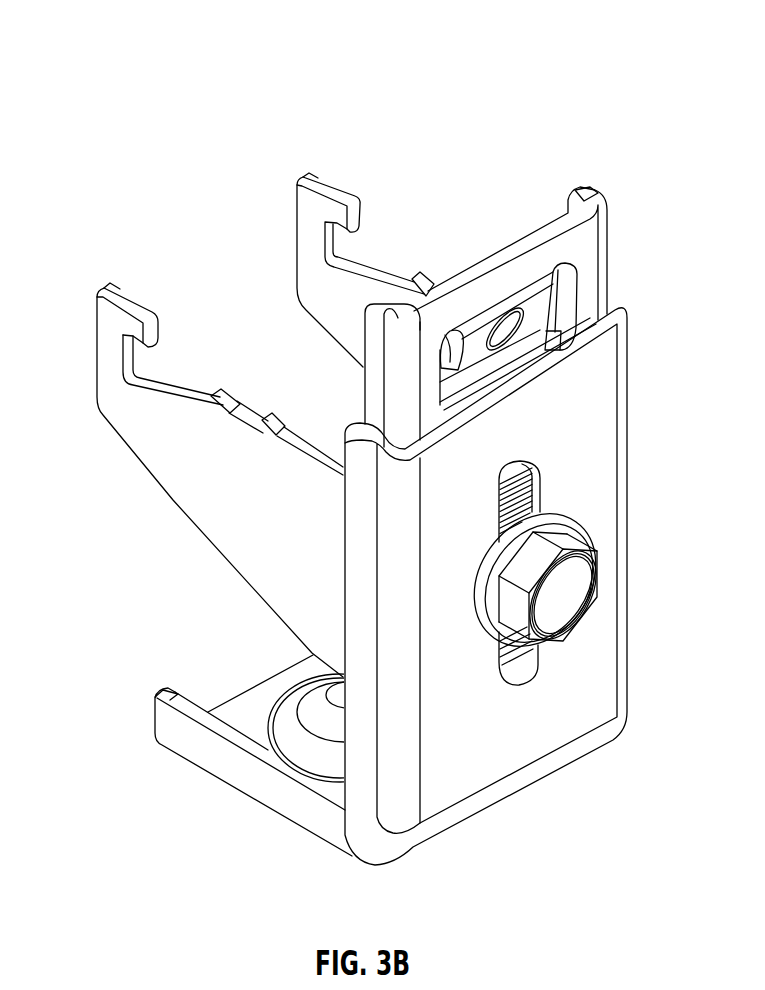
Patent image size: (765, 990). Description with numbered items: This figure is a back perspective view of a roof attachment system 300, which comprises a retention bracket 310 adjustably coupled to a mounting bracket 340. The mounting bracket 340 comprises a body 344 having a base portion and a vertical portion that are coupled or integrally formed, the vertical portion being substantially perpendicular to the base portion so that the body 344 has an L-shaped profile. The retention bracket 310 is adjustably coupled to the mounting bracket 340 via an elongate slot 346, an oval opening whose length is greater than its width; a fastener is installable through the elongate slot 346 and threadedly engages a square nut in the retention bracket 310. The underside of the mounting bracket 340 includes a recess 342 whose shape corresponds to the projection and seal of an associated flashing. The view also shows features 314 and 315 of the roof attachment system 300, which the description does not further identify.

The roof attachment system 300 is at (115, 76).
The retention bracket 310 is at (583, 186).
The first hook tab 314 is at (97, 405).
The second hook tab 315 is at (315, 172).
The mounting bracket 340 is at (590, 752).
The recess 342 is at (302, 740).
The body 344 is at (543, 475).
The elongate slot 346 is at (572, 628).